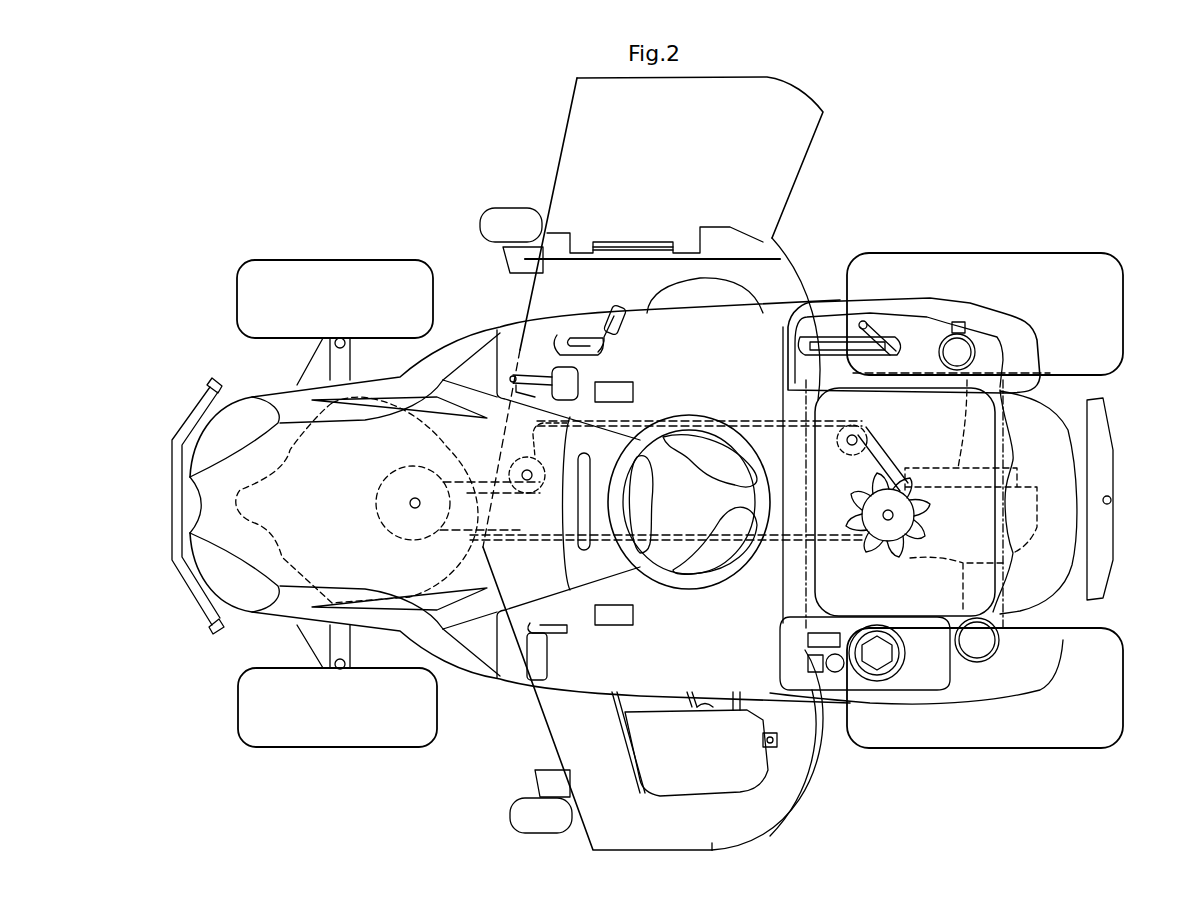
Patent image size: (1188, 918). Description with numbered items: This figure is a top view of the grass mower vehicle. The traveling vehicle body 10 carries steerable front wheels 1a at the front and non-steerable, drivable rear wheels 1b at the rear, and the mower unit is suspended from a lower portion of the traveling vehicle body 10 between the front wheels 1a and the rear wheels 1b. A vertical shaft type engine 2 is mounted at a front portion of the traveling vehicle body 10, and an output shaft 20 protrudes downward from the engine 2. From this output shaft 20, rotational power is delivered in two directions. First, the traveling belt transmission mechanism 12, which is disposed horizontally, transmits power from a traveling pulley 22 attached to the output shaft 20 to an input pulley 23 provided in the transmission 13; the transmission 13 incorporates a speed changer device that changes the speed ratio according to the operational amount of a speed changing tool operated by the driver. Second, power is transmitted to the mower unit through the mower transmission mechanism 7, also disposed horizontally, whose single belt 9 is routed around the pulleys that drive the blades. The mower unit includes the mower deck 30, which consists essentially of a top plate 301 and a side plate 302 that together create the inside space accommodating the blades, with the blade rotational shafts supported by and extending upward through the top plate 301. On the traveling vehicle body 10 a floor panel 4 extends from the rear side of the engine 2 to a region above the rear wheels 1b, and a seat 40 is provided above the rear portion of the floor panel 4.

The front wheels 1a is at (333, 265).
The rear wheels 1b is at (1043, 260).
The engine 2 is at (288, 448).
The floor panel 4 is at (767, 333).
The mower transmission mechanism 7 is at (650, 800).
The belt 9 is at (687, 707).
The traveling vehicle body 10 is at (922, 297).
The traveling belt transmission mechanism 12 is at (700, 548).
The transmission 13 is at (928, 473).
The output shaft 20 is at (408, 505).
The traveling pulley 22 is at (390, 478).
The input pulley 23 is at (888, 527).
The mower deck 30 is at (545, 728).
The top plate 301 is at (810, 758).
The side plate 302 is at (800, 807).
The seat 40 is at (1080, 466).